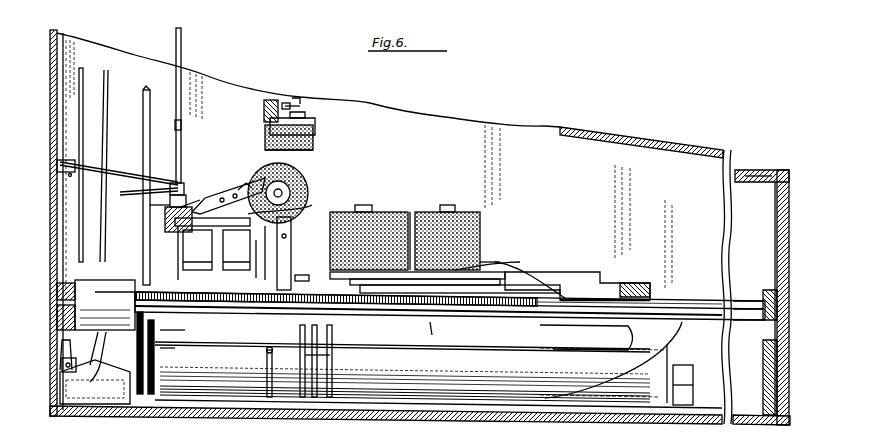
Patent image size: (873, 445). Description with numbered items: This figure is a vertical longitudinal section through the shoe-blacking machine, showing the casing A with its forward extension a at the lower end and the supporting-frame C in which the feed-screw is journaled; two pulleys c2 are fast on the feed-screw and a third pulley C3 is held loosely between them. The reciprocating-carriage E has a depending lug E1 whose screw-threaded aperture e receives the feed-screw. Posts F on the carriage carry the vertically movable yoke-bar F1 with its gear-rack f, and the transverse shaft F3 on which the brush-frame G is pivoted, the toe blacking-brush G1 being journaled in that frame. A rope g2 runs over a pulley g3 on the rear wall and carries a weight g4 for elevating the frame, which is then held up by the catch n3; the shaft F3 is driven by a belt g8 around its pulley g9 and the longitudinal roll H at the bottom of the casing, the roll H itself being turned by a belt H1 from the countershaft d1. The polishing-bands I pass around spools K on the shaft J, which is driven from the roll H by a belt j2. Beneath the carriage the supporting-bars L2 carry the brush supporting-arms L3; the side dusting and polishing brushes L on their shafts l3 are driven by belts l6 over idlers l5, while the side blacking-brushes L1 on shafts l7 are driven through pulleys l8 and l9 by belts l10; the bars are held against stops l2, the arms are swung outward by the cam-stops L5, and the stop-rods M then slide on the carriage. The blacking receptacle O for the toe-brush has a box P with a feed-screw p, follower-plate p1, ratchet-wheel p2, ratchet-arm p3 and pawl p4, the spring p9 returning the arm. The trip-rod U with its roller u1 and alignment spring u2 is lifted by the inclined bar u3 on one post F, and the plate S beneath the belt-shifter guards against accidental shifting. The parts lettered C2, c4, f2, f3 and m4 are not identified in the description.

The supporting-frame C is at (754, 300).
The forward extension a is at (773, 176).
The countershaft d1 is at (105, 72).
The belt H1 is at (143, 103).
The trip-rod U is at (181, 55).
The casing A is at (240, 88).
The spring u2 is at (181, 122).
The spring p9 is at (264, 106).
The roller u1 is at (176, 178).
The pulley g3 is at (66, 175).
The rope or wire g2 is at (147, 186).
The inclined bar u3 is at (152, 206).
The yoke-bar F1 is at (186, 198).
The standards or posts F is at (170, 230).
The gear-rack f is at (195, 205).
The transverse shaft F3 is at (232, 190).
The brush-frame G is at (245, 180).
The toe blacking-brush G1 is at (308, 172).
The belt g8 is at (312, 208).
The pulley g9 is at (292, 235).
The weight g4 is at (309, 279).
The longitudinal shaft J is at (252, 248).
The belt j2 is at (264, 259).
The spools K is at (216, 250).
The box P is at (265, 130).
The blacking-receptacle O is at (315, 124).
The follower-plate p1 is at (313, 137).
The feed-screw p is at (305, 115).
The ratchet-wheel p2 is at (300, 108).
The ratchet-arm p3 is at (286, 102).
The pawl p4 is at (297, 100).
The side dusting and polishing brushes L is at (482, 231).
The vertical shaft l7 is at (364, 205).
The side blacking-brushes L1 is at (410, 212).
The brush-shaft l3 is at (447, 205).
The pulley l9 is at (485, 262).
The belt l10 is at (495, 270).
The cam-stops L5 is at (530, 262).
The pulleys l8 is at (355, 278).
The supporting-bars L2 is at (470, 293).
The threaded rod c4 is at (472, 322).
The third pulley C3 is at (108, 282).
The pulleys c2 is at (57, 294).
The catch n3 is at (115, 295).
The bracket C2 is at (128, 325).
The wire m4 is at (100, 366).
The vertical plate S is at (62, 366).
The depending lug E1 is at (160, 328).
The screw-threaded aperture e is at (186, 335).
The polishing-bands I is at (402, 338).
The plate f2 is at (402, 338).
The stop-rods M is at (277, 362).
The idlers l5 is at (325, 320).
The reciprocating-carriage E is at (342, 361).
The brush supporting-arm L3 is at (365, 361).
The depending stops l2 is at (436, 334).
The belts l6 is at (330, 360).
The base plate f3 is at (160, 352).
The longitudinal roll H is at (405, 382).